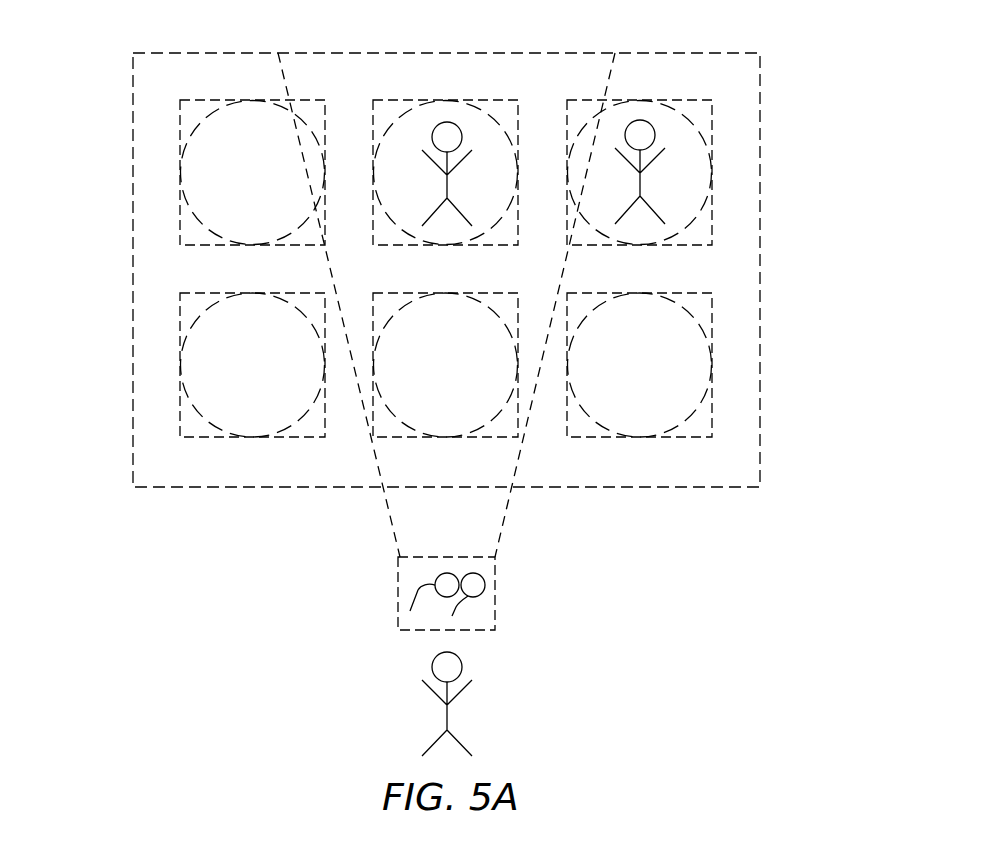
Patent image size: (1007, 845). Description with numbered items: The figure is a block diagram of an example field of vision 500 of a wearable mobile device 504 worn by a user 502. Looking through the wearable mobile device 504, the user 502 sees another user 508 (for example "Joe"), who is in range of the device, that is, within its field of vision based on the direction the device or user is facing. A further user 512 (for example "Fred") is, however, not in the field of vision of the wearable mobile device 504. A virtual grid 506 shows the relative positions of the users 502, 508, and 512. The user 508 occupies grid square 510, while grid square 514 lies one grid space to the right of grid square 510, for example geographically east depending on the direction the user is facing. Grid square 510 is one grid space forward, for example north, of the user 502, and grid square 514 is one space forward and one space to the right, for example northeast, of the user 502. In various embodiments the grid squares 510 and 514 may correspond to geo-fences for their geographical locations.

The field of vision 500 is at (732, 27).
The user 502 is at (439, 655).
The wearable mobile device 504 is at (398, 598).
The virtual grid 506 is at (133, 266).
The user 508 is at (436, 126).
The grid square 510 is at (372, 172).
The user 512 is at (634, 121).
The grid square 514 is at (712, 172).